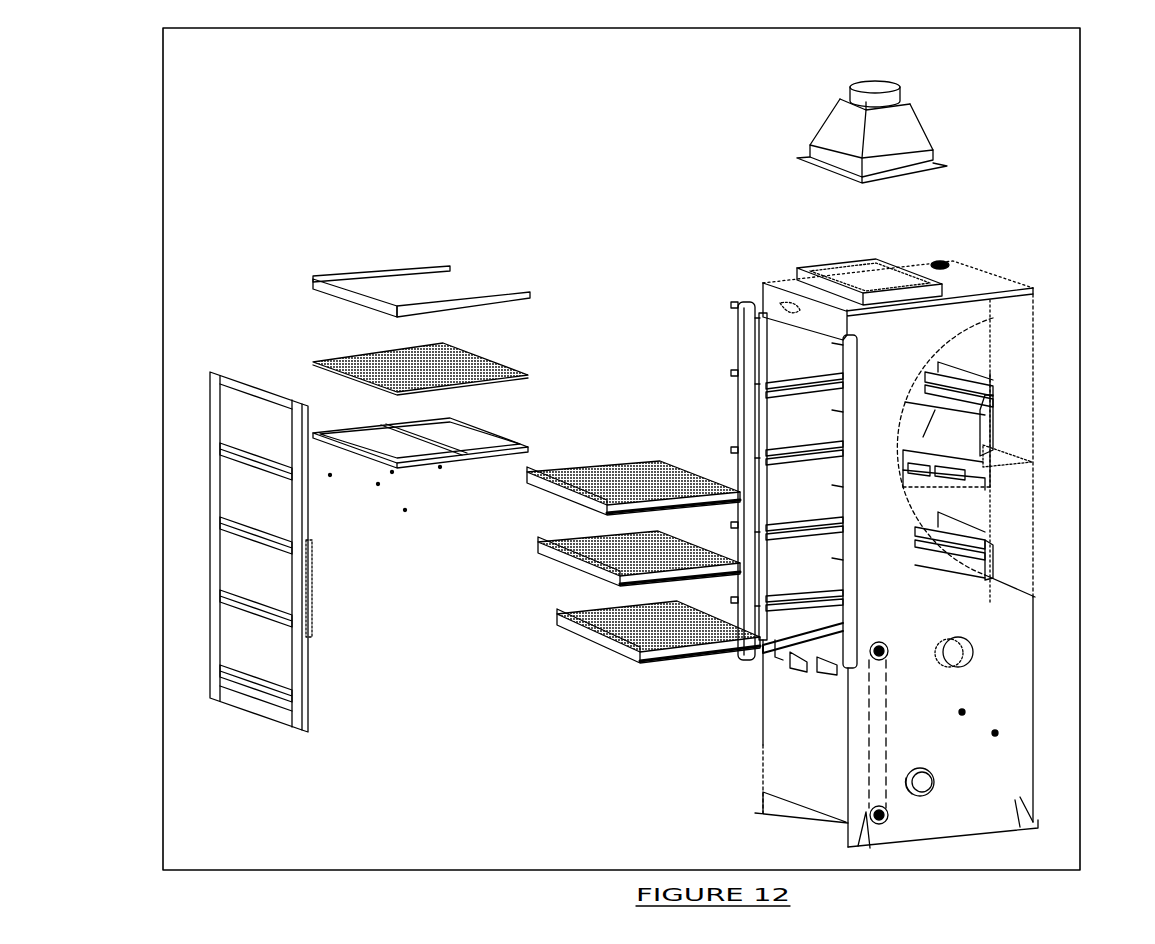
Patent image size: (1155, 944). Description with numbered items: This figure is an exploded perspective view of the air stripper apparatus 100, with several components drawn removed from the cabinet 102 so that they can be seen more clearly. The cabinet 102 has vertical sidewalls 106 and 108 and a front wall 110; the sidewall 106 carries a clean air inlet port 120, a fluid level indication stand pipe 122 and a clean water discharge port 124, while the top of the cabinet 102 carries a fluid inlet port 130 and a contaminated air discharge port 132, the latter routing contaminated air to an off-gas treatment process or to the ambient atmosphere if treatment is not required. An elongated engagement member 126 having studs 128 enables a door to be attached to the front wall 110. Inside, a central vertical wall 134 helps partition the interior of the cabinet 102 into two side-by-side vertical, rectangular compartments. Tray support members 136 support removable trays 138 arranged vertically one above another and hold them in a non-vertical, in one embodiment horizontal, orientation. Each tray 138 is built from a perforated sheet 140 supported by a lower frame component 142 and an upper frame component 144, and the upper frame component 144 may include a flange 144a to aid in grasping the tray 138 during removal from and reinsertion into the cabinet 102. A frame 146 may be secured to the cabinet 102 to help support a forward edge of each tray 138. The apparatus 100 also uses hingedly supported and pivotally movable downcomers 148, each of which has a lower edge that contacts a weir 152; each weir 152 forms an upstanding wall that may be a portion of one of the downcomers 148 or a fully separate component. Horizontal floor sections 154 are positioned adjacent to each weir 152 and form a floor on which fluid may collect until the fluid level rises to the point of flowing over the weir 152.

The air stripper apparatus 100 is at (958, 205).
The cabinet 102 is at (1040, 294).
The vertical sidewall 106 is at (978, 313).
The vertical sidewall 108 is at (792, 280).
The front wall 110 is at (774, 695).
The clean air inlet port 120 is at (947, 645).
The fluid level indication stand pipe 122 is at (866, 748).
The clean water discharge port 124 is at (904, 769).
The elongated engagement member 126 is at (743, 330).
The studs 128 is at (741, 380).
The fluid inlet port 130 is at (944, 264).
The contaminated air discharge port 132 is at (848, 99).
The central vertical wall 134 is at (962, 490).
The tray support members 136 is at (765, 385).
The removable trays 138 is at (522, 502).
The perforated sheet 140 is at (352, 359).
The lower frame component 142 is at (346, 450).
The upper frame component 144 is at (333, 285).
The flange 144a is at (318, 287).
The frame 146 is at (210, 494).
The downcomers 148 is at (990, 427).
The weir 152 is at (935, 375).
The horizontal floor sections 154 is at (992, 455).